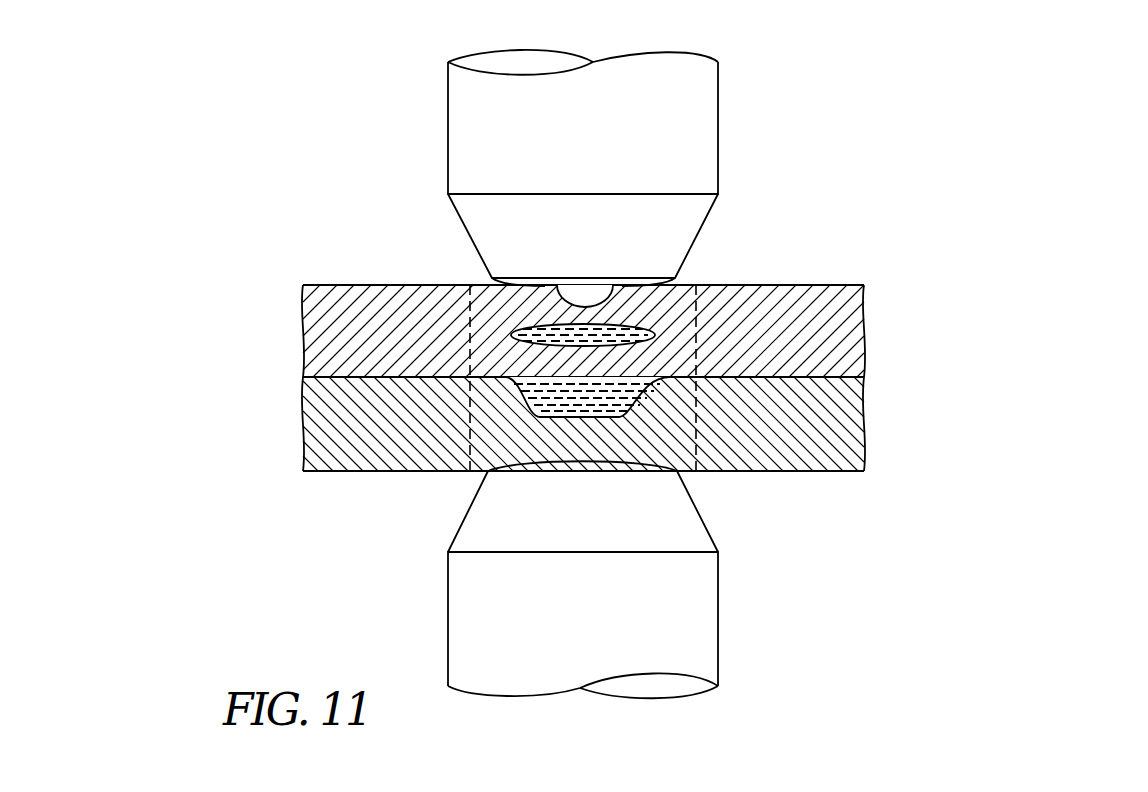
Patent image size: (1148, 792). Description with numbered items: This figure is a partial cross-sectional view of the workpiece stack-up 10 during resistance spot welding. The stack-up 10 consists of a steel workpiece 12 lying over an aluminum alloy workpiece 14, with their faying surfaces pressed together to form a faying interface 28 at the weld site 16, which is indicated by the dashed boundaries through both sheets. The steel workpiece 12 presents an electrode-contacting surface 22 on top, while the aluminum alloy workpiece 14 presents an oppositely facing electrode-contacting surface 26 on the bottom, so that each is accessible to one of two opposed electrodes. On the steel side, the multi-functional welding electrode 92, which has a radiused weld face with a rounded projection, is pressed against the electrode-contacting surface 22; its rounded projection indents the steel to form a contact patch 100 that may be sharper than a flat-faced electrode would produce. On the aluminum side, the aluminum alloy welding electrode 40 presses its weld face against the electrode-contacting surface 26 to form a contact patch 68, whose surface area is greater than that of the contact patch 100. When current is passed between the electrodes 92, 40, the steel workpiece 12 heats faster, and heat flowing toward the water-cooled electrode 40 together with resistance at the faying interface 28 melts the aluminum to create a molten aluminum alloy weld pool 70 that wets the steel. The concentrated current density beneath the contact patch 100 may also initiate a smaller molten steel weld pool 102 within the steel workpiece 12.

The workpiece stack-up 10 is at (280, 333).
The steel workpiece 12 is at (840, 333).
The aluminum alloy workpiece 14 is at (838, 422).
The weld site 16 is at (697, 327).
The electrode-contacting surface of the steel workpiece 22 is at (378, 284).
The electrode-contacting surface of the aluminum alloy workpiece 26 is at (360, 472).
The faying interface 28 is at (355, 377).
The aluminum alloy welding electrode 40 is at (745, 595).
The contact patch 68 is at (628, 472).
The molten aluminum alloy weld pool 70 is at (547, 400).
The multi-functional welding electrode 92 is at (735, 97).
The contact patch 100 is at (577, 290).
The molten steel weld pool 102 is at (627, 332).